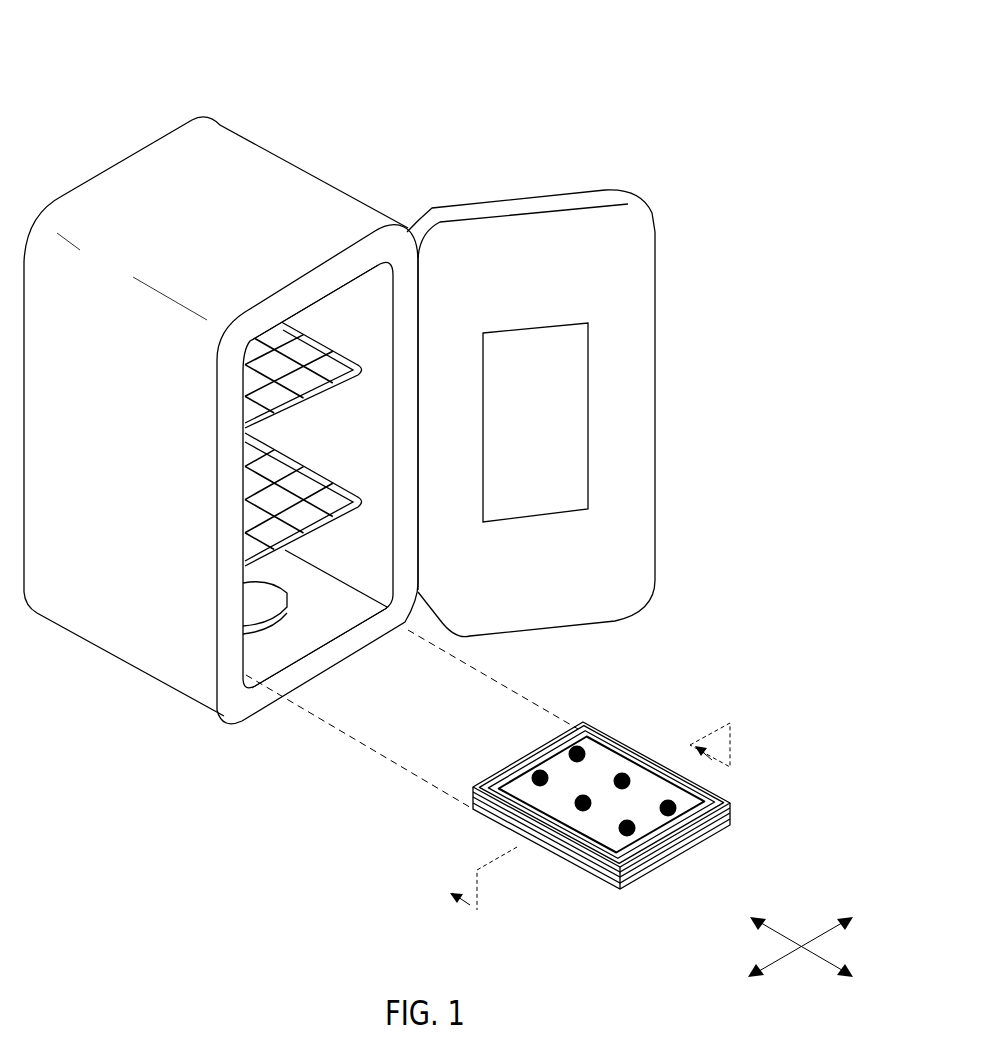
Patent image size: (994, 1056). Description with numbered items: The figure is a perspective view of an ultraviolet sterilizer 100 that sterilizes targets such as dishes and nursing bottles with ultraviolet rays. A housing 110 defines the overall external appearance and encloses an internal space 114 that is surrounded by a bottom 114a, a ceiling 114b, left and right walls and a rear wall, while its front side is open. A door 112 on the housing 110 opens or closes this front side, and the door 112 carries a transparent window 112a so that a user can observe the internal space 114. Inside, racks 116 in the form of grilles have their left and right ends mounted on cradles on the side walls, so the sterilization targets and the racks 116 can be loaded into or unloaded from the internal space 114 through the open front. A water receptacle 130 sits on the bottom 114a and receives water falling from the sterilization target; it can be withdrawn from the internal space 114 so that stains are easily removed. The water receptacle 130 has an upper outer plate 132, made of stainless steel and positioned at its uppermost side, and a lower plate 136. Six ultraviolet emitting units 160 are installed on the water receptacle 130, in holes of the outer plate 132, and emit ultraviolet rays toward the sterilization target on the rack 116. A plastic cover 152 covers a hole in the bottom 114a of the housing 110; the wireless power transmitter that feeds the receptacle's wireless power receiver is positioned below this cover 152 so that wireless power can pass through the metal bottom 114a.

The ultraviolet sterilizer 100 is at (57, 43).
The housing 110 is at (258, 173).
The door 112 is at (552, 202).
The transparent window 112a is at (573, 400).
The internal space 114 is at (358, 311).
The bottom 114a is at (305, 634).
The ceiling 114b is at (332, 312).
The racks 116 is at (313, 470).
The water receptacle 130 is at (670, 794).
The outer plate 132 is at (617, 737).
The lower plate 136 is at (587, 867).
The cover 152 is at (253, 588).
The ultraviolet emitting units 160 is at (592, 737).